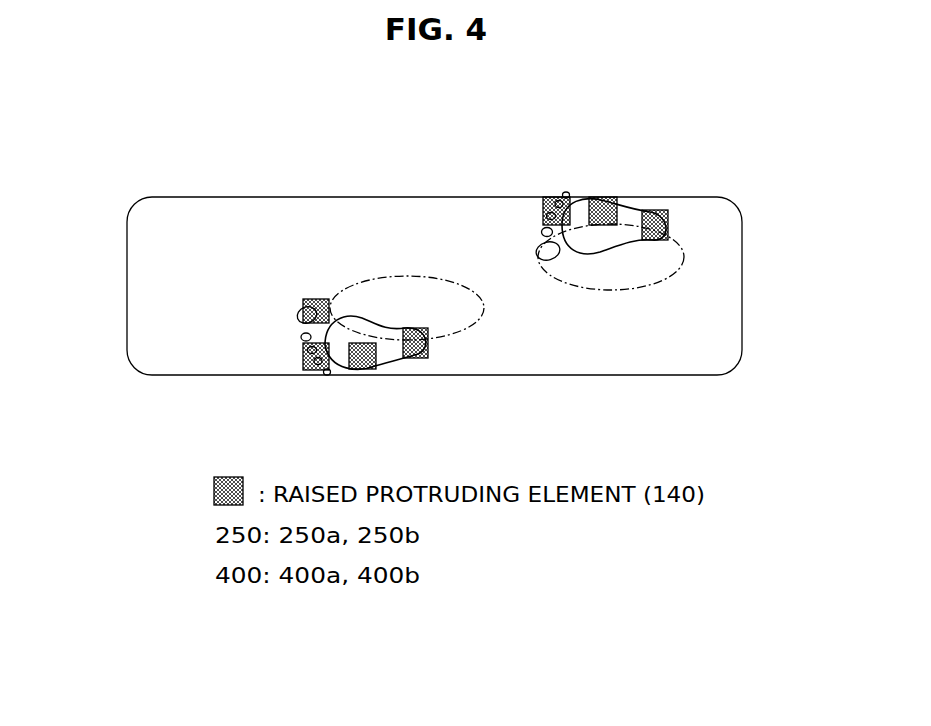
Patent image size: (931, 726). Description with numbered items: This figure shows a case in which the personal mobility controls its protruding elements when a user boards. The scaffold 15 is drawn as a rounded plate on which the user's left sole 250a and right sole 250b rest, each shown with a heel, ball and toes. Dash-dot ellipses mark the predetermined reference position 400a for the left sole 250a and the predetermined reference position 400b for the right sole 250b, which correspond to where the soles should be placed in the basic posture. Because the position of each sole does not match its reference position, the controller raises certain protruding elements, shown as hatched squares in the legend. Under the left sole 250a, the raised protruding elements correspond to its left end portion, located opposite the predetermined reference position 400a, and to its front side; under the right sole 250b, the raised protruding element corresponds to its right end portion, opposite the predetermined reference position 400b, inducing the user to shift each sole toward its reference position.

The scaffold 15 is at (222, 189).
The left sole 250a is at (342, 364).
The right sole 250b is at (623, 204).
The predetermined reference position 400a is at (369, 280).
The predetermined reference position 400b is at (627, 291).